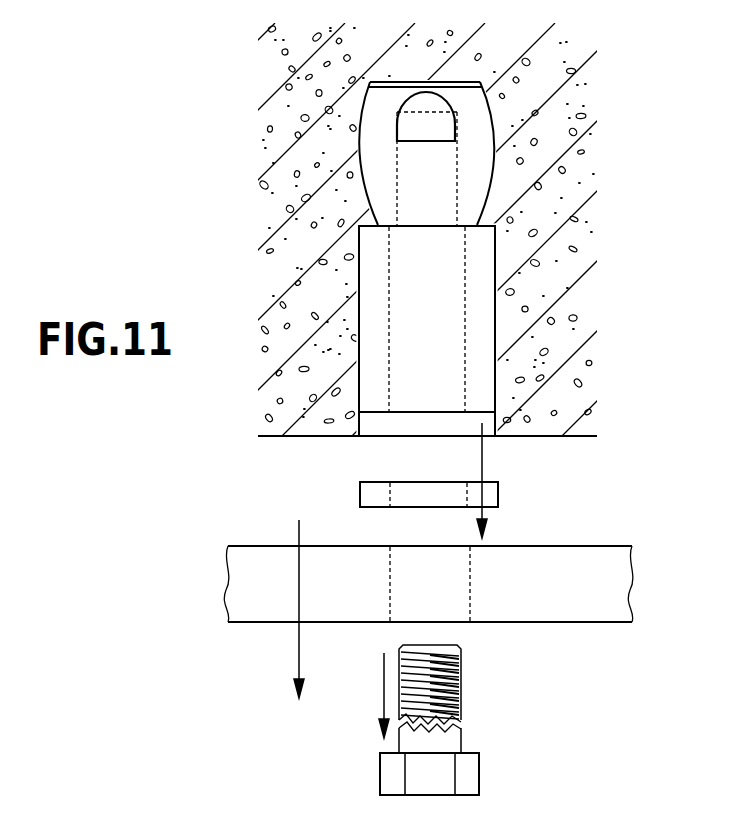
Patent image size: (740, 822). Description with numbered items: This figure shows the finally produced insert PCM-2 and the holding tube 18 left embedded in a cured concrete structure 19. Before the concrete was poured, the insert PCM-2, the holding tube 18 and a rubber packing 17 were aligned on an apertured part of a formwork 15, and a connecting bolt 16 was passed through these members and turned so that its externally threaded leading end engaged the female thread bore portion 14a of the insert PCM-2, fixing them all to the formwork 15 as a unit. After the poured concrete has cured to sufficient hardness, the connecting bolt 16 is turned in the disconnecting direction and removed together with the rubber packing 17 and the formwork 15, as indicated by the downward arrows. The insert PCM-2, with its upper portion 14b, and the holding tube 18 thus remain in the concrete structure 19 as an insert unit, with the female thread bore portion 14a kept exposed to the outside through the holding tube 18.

The female thread bore portion 14a is at (460, 178).
The anchor upper eye portion 14b is at (430, 100).
The finally produced insert PCM-2 is at (493, 140).
The formwork 15 is at (587, 622).
The connecting bolt 16 is at (462, 735).
The rubber packing 17 is at (360, 490).
The holding tube 18 is at (495, 305).
The concrete structure 19 is at (543, 373).